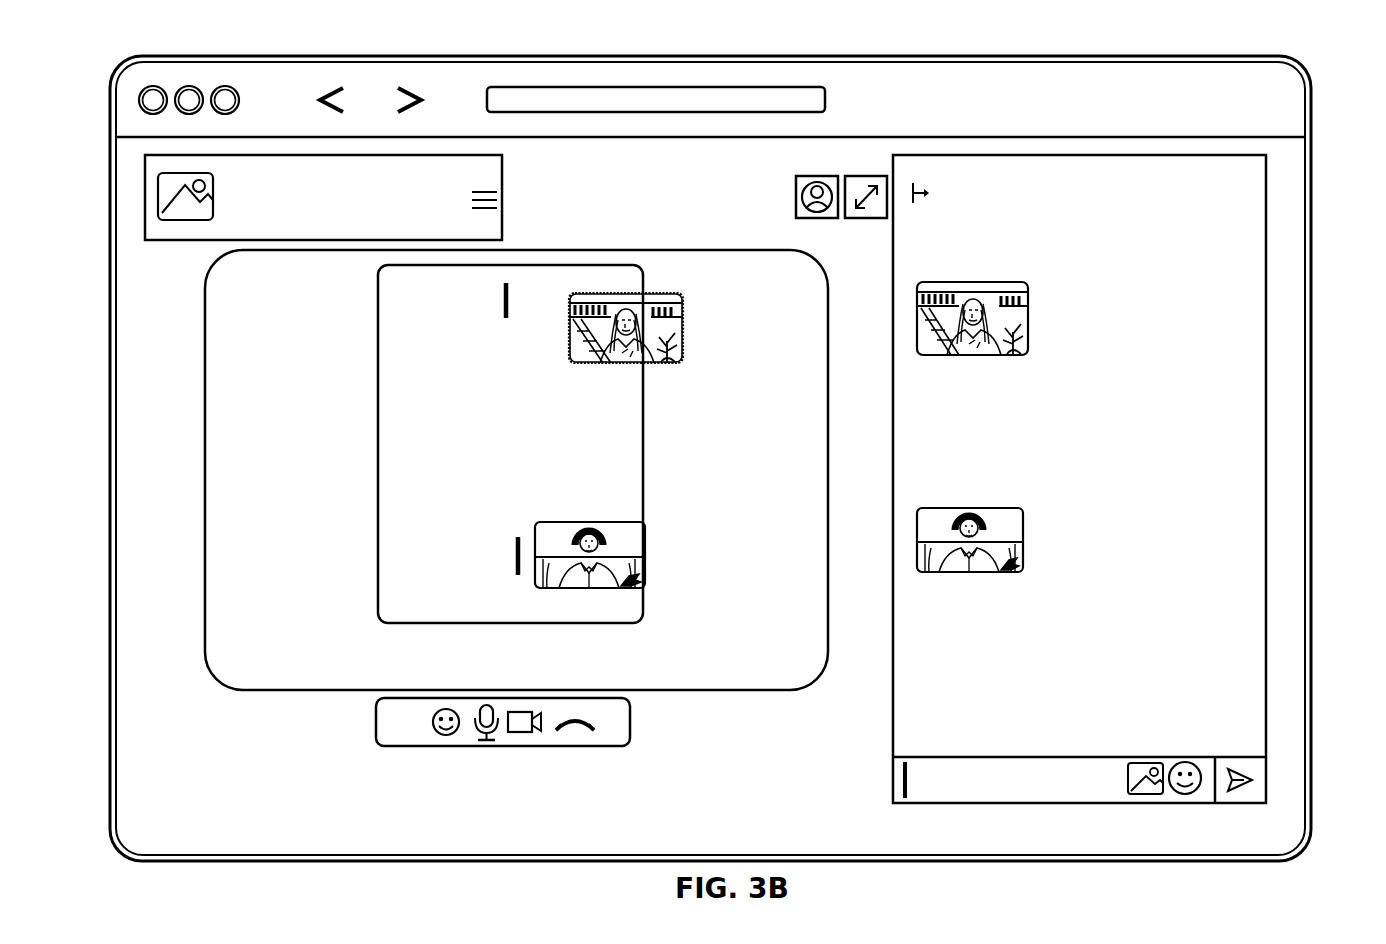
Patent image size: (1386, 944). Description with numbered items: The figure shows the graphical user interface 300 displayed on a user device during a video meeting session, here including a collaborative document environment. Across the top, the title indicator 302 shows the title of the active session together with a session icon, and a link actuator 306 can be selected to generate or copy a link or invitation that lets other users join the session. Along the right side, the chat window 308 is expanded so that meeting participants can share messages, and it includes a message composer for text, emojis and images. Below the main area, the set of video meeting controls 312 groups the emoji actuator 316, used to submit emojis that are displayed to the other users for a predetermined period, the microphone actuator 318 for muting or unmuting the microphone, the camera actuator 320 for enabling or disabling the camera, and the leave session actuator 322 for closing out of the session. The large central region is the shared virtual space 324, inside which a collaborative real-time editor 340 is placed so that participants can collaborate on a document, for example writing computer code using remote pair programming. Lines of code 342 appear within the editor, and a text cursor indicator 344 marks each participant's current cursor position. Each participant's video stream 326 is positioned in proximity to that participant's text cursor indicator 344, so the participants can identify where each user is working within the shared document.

The graphical user interface 300 is at (148, 54).
The title indicator 302 is at (143, 188).
The link actuator 306 is at (866, 174).
The chat window 308 is at (1267, 226).
The set of video meeting controls 312 is at (631, 722).
The emoji actuator 316 is at (443, 736).
The microphone actuator 318 is at (487, 742).
The camera actuator 320 is at (522, 734).
The leave session actuator 322 is at (590, 732).
The shared virtual space 324 is at (204, 428).
The video stream 326 is at (684, 320).
The collaborative real-time editor 340 is at (377, 322).
The lines of code 342 is at (543, 424).
The text cursor indicator 344 is at (507, 280).